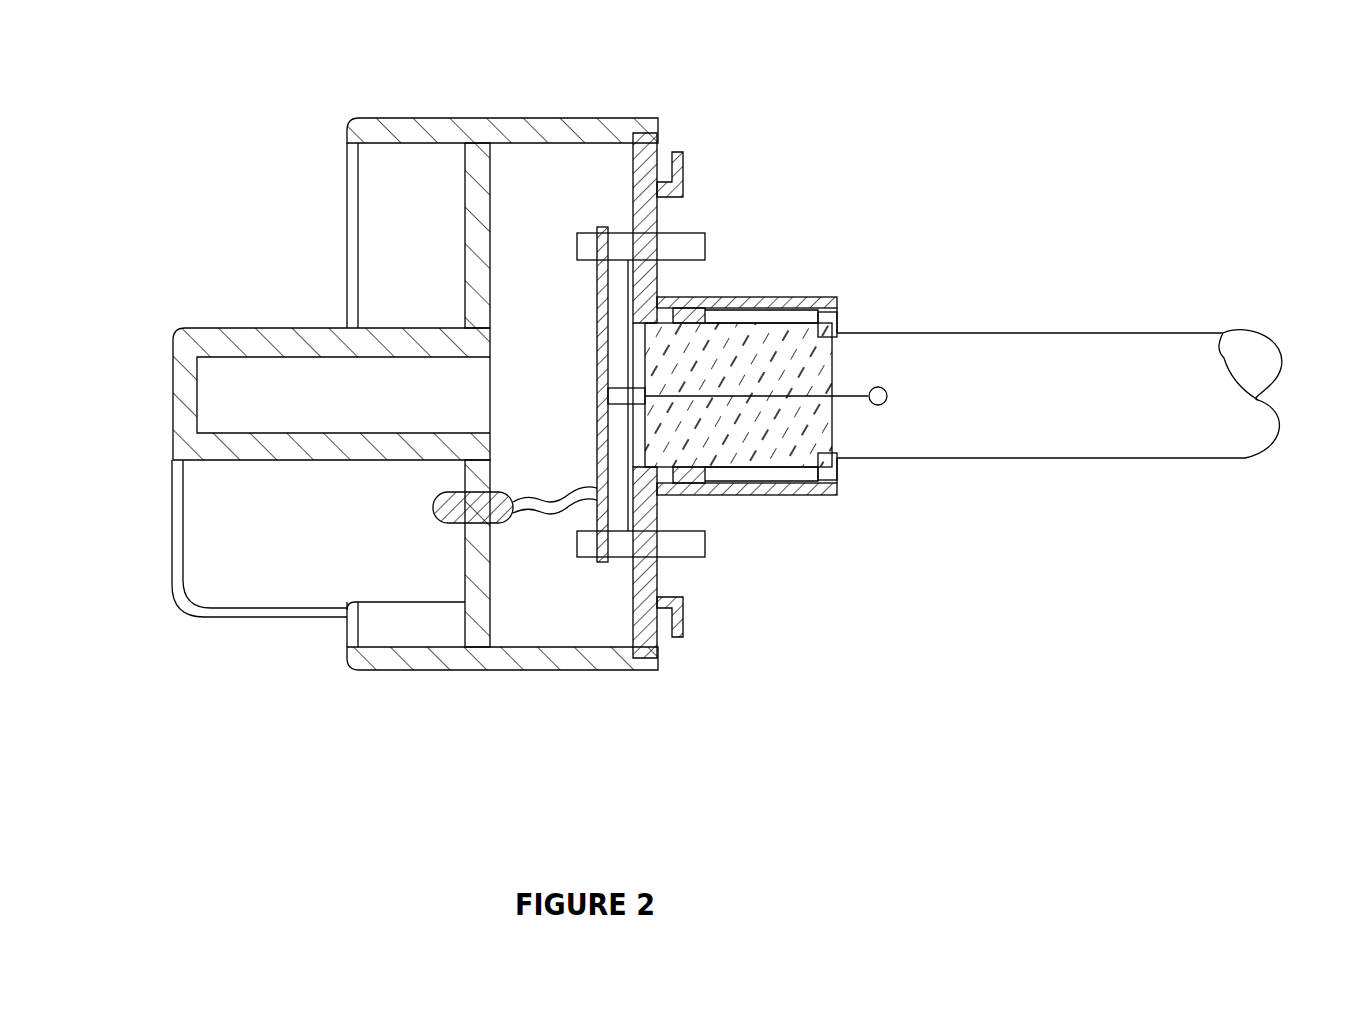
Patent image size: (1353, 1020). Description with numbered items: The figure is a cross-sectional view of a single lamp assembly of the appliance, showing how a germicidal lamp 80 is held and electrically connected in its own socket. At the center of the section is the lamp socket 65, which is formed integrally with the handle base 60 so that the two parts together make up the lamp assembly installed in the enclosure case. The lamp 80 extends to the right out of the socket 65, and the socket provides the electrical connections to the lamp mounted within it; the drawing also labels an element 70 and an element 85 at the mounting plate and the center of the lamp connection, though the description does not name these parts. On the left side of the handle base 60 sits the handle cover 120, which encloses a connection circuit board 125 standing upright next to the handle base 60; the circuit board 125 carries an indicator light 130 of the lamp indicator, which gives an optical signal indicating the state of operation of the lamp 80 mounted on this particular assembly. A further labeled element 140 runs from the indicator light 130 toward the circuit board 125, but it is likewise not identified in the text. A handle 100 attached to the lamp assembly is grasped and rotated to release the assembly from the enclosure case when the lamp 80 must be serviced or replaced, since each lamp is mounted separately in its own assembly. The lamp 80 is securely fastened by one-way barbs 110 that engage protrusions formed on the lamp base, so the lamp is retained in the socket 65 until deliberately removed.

The handle base 60 is at (832, 353).
The lamp socket 65 is at (908, 513).
The bolt 70 is at (964, 327).
The lamp 80 is at (1059, 353).
The conductor pin 85 is at (909, 294).
The handle 100 is at (925, 434).
The one-way barbs 110 is at (917, 453).
The handle cover 120 is at (415, 394).
The connection circuit board 125 is at (424, 326).
The indicator light 130 is at (289, 596).
The wire 140 is at (331, 633).